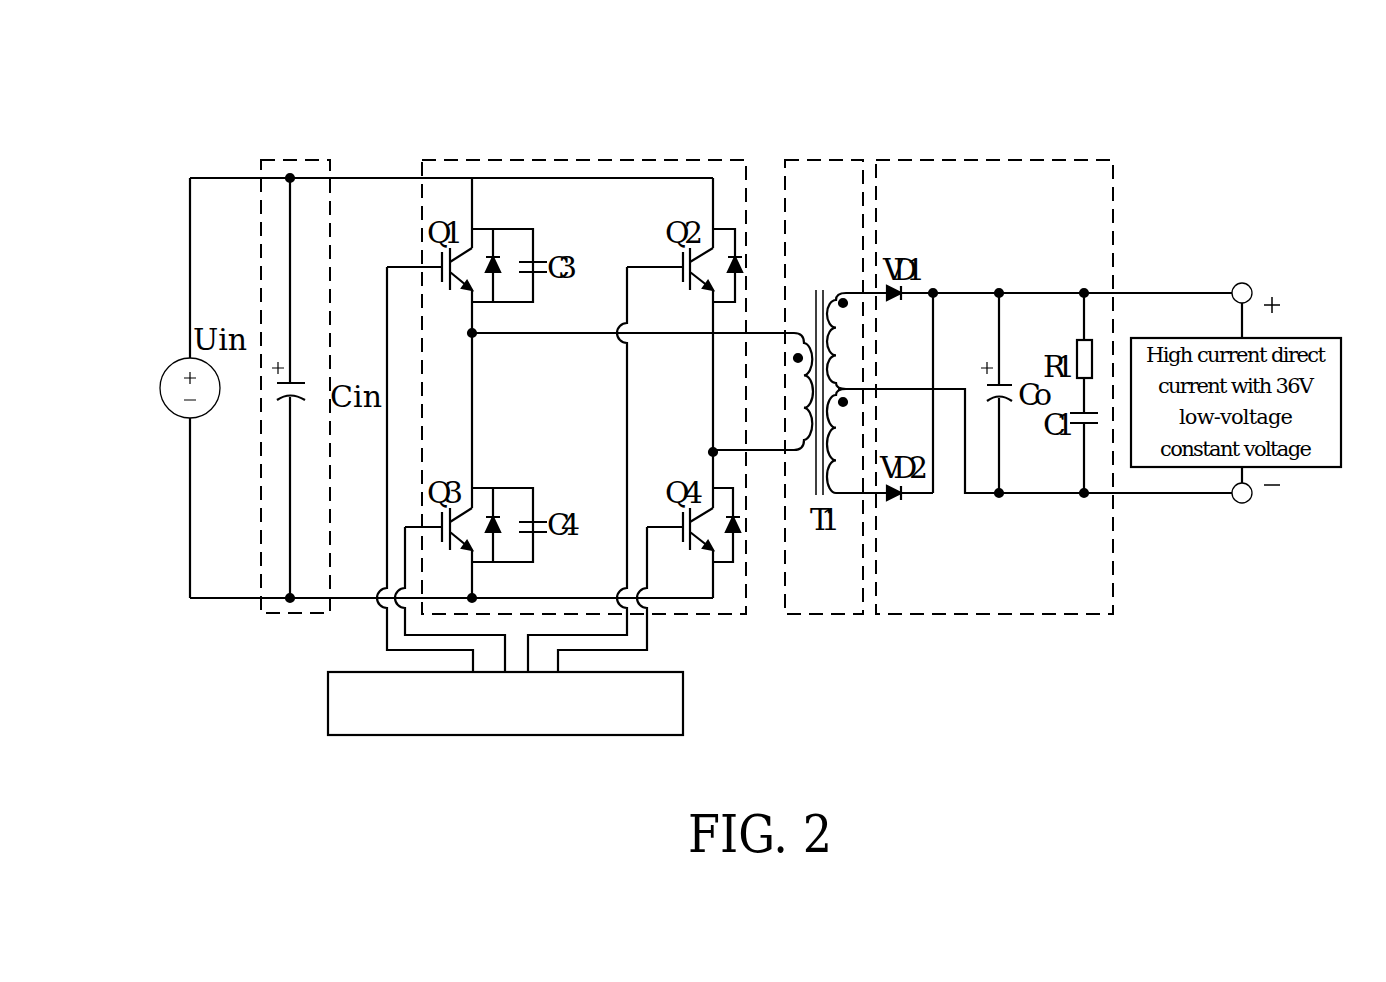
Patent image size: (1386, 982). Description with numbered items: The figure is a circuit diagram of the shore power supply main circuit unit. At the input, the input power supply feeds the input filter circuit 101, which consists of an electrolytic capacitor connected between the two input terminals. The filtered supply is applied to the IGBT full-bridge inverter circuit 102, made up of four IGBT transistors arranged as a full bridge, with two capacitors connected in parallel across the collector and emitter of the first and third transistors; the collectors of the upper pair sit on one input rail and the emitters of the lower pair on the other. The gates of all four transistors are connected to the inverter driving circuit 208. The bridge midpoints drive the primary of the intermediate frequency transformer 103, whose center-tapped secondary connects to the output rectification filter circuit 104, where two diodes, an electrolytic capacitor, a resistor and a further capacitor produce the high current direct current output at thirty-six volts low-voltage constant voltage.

The input filter circuit 101 is at (283, 158).
The IGBT full-bridge inverter circuit 102 is at (563, 158).
The intermediate frequency transformer 103 is at (806, 158).
The output rectification filter circuit 104 is at (978, 158).
The inverter driving circuit 208 is at (685, 707).